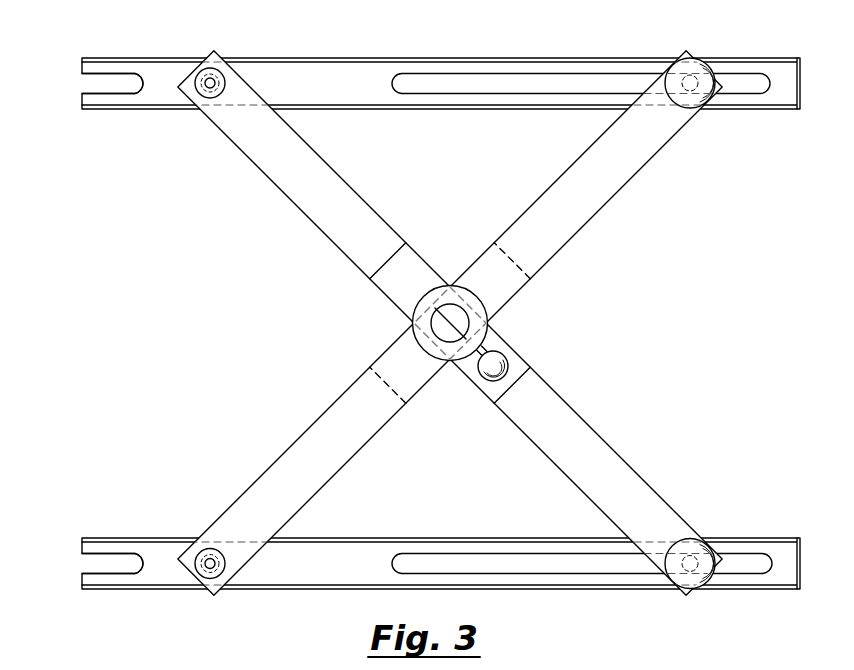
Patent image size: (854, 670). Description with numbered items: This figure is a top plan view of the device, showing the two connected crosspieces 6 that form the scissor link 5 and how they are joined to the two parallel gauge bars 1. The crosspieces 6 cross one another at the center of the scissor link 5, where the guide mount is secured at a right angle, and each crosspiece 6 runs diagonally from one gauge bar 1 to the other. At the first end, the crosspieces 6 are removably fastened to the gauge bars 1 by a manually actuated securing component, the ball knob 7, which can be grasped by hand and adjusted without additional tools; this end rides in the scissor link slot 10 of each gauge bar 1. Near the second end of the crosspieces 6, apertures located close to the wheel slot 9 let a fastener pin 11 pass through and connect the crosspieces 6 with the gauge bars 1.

The gauge bar 1 is at (290, 58).
The scissor link 5 is at (484, 323).
The crosspiece 6 is at (297, 206).
The ball knob 7 is at (698, 63).
The wheel slot 9 is at (92, 74).
The scissor link slot 10 is at (543, 83).
The fastener pin 11 is at (207, 90).